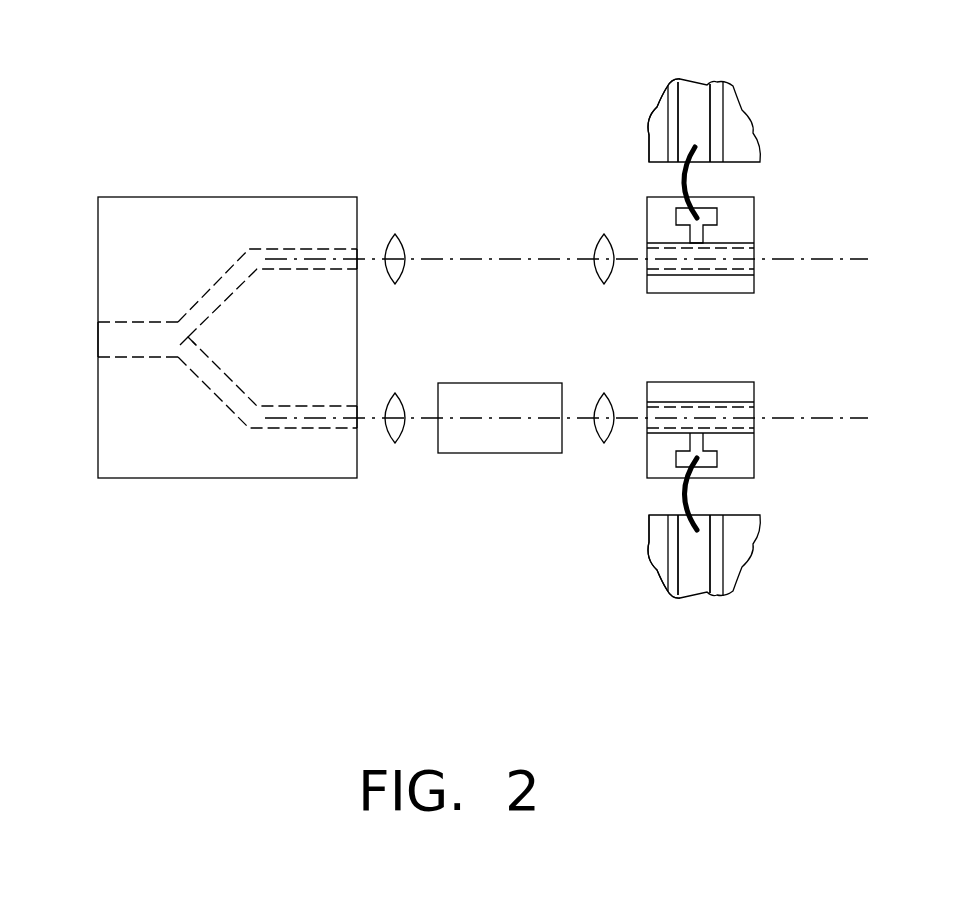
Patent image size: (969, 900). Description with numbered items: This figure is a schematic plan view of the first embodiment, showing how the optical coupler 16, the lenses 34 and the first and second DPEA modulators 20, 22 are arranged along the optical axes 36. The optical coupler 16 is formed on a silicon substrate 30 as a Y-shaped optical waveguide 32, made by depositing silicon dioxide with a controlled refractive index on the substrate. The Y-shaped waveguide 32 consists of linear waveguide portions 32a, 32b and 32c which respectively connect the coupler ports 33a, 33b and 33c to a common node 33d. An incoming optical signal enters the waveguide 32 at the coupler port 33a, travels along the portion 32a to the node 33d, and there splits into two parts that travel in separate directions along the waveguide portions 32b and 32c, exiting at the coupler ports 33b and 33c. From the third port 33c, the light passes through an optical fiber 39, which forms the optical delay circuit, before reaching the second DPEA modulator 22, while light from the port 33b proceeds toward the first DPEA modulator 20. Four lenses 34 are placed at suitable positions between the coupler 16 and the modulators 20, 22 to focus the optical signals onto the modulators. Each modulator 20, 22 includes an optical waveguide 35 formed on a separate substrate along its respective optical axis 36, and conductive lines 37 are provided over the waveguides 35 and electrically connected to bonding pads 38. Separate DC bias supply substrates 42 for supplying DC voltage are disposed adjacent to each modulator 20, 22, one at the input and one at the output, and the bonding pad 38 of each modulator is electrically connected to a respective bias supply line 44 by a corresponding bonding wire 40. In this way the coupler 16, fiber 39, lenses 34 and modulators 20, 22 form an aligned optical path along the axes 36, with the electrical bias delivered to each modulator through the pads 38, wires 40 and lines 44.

The optical coupler 16 is at (121, 178).
The first DPEA modulator 20 is at (732, 180).
The second DPEA modulator 22 is at (657, 480).
The silicon substrate 30 is at (262, 208).
The Y-shaped optical waveguide 32 is at (196, 338).
The linear waveguide portion 32a is at (143, 347).
The linear waveguide portion 32b is at (218, 285).
The linear waveguide portion 32c is at (222, 395).
The coupler port 33a is at (98, 342).
The coupler port 33b is at (357, 267).
The coupler port 33c is at (357, 408).
The common node 33d is at (187, 330).
The lens 34 is at (400, 245).
The optical waveguide 35 is at (668, 263).
The optical axis 36 is at (785, 258).
The conductive line 37 is at (705, 273).
The bonding pad 38 is at (710, 217).
The optical fiber 39 is at (493, 453).
The bonding wire 40 is at (678, 185).
The DC bias supply substrate 42 is at (655, 130).
The bias supply line 44 is at (692, 100).